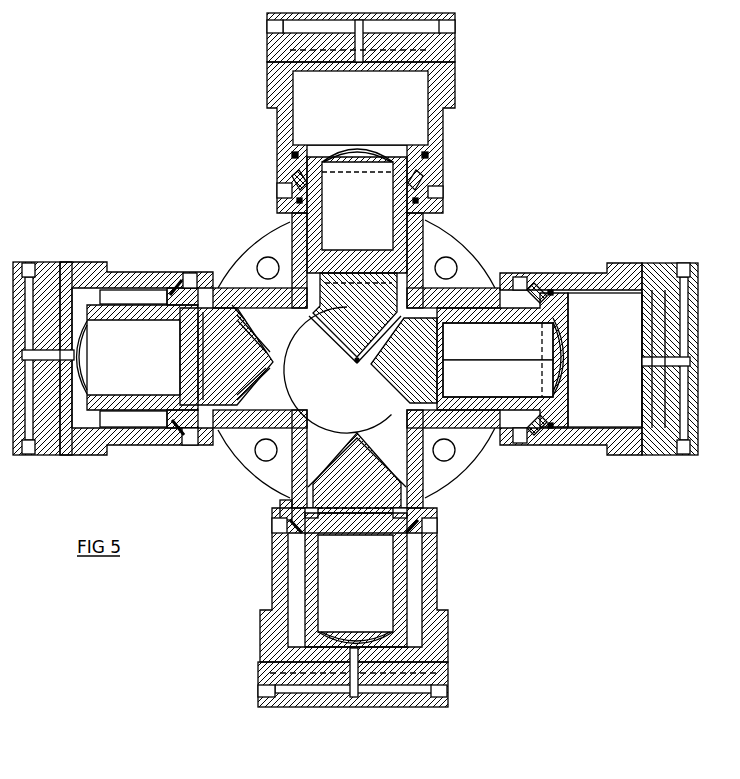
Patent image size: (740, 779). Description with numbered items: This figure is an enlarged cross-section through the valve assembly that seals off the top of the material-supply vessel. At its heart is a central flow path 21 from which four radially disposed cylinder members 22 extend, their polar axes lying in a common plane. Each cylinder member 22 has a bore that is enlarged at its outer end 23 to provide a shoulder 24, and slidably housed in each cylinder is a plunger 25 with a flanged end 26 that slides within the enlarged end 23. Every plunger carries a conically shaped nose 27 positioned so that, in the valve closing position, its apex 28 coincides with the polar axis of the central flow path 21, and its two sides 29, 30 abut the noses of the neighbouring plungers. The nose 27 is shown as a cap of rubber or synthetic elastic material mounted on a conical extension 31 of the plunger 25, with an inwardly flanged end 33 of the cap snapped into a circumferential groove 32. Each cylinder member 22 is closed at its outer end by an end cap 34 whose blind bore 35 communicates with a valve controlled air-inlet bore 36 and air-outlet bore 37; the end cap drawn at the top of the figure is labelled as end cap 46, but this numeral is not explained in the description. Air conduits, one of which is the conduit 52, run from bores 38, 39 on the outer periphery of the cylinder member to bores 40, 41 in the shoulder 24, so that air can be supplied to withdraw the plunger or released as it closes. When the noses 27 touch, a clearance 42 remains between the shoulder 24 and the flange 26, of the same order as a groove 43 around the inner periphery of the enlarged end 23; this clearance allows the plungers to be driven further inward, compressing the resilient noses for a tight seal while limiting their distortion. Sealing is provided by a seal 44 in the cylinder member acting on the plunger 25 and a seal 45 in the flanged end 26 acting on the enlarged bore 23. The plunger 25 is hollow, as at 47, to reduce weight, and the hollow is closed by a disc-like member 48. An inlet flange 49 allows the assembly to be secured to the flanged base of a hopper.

The central flow path 21 is at (315, 376).
The cylinder member 22 is at (277, 125).
The enlarged end of bore 23 is at (355, 112).
The shoulder 24 is at (413, 558).
The plunger 25 is at (135, 406).
The flanged end 26 is at (580, 273).
The conically shaped nose 27 is at (387, 470).
The apex of conically shaped nose 28 is at (356, 362).
The side of conical nose 29 is at (233, 356).
The side of conical nose 30 is at (258, 389).
The conical shaped extension 31 is at (240, 318).
The circumferential groove 32 is at (290, 497).
The inwardly flanged end 33 is at (400, 513).
The end cap 34 is at (437, 667).
The blind bore 35 is at (358, 693).
The air-inlet bore 36 is at (290, 690).
The air-outlet bore 37 is at (417, 692).
The bore 38 is at (522, 278).
The bore 39 is at (518, 445).
The bore in shoulder 40 is at (533, 307).
The bore in shoulder 41 is at (535, 413).
The clearance 42 is at (540, 413).
The groove 43 is at (540, 303).
The seal 44 is at (300, 194).
The seal 45 is at (428, 157).
The upper end cap 46 is at (455, 64).
The hollow 47 is at (367, 219).
The disc-like member 48 is at (384, 153).
The inlet flange 49 is at (442, 247).
The air conduit 52 is at (528, 300).